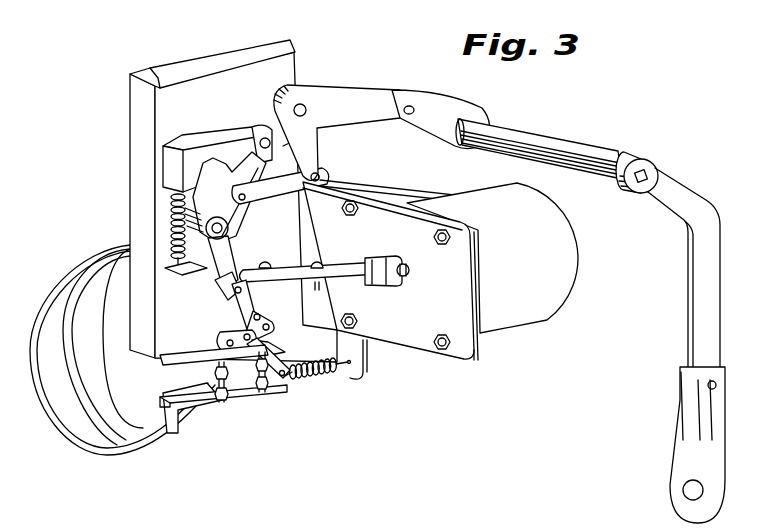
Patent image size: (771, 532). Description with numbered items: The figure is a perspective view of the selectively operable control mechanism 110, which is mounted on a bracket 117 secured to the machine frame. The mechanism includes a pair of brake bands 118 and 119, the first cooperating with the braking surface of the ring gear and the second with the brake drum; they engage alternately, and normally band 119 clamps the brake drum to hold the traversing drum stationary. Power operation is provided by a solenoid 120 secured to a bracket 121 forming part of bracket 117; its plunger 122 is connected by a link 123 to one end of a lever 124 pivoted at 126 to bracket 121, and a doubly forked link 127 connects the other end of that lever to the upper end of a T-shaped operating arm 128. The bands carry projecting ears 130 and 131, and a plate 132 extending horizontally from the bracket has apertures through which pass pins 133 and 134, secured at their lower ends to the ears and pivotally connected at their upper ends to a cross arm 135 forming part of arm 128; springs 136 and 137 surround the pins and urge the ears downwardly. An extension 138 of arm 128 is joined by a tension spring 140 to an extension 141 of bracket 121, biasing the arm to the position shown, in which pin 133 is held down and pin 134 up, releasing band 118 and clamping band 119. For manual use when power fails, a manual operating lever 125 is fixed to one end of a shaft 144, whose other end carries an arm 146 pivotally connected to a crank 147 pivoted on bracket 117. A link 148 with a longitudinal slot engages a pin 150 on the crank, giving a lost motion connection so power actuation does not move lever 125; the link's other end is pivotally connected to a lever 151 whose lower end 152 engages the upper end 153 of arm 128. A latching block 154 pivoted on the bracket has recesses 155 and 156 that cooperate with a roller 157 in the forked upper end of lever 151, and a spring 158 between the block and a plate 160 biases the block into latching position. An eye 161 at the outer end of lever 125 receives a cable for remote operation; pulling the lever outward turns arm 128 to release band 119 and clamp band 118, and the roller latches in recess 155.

The selectively operable control mechanism 110 is at (488, 366).
The bracket 117 is at (258, 62).
The brake band 118 is at (63, 418).
The brake band 119 is at (115, 403).
The solenoid 120 is at (548, 305).
The bracket 121 is at (427, 355).
The plunger 122 is at (395, 286).
The link 123 is at (378, 264).
The lever 124 is at (340, 272).
The manual operating lever 125 is at (671, 332).
The pivot 126 is at (315, 265).
The doubly forked link 127 is at (250, 267).
The T-shaped operating arm 128 is at (240, 300).
The projecting ear 130 is at (200, 388).
The projecting ear 131 is at (278, 387).
The plate 132 is at (265, 323).
The pin 133 is at (228, 400).
The pin 134 is at (258, 390).
The cross arm 135 is at (263, 317).
The spring 136 is at (218, 412).
The spring 137 is at (270, 407).
The extension 138 is at (287, 377).
The tension spring 140 is at (323, 364).
The extension 141 is at (367, 362).
The shaft 144 is at (568, 148).
The arm 146 is at (435, 103).
The crank 147 is at (338, 97).
The link 148 is at (270, 195).
The pin 150 is at (322, 181).
The lever 151 is at (233, 207).
The lower end of lever 151 152 is at (213, 268).
The upper end of operating arm 128 153 is at (200, 318).
The latching block 154 is at (218, 135).
The latching recess 155 is at (207, 162).
The latching recess 156 is at (260, 128).
The roller 157 is at (313, 133).
The spring 158 is at (170, 222).
The plate 160 is at (168, 280).
The eye 161 is at (687, 492).